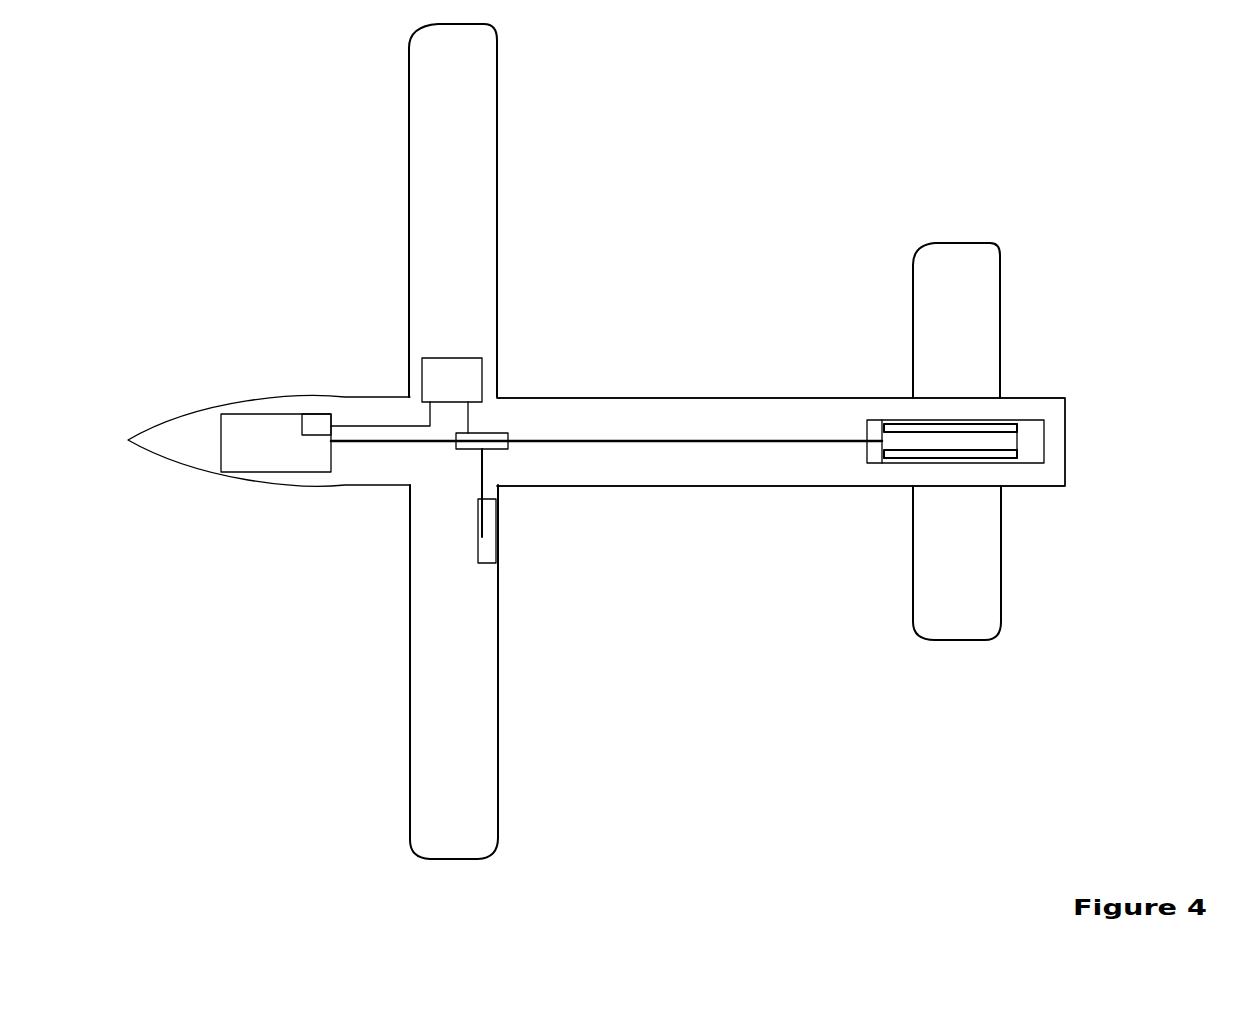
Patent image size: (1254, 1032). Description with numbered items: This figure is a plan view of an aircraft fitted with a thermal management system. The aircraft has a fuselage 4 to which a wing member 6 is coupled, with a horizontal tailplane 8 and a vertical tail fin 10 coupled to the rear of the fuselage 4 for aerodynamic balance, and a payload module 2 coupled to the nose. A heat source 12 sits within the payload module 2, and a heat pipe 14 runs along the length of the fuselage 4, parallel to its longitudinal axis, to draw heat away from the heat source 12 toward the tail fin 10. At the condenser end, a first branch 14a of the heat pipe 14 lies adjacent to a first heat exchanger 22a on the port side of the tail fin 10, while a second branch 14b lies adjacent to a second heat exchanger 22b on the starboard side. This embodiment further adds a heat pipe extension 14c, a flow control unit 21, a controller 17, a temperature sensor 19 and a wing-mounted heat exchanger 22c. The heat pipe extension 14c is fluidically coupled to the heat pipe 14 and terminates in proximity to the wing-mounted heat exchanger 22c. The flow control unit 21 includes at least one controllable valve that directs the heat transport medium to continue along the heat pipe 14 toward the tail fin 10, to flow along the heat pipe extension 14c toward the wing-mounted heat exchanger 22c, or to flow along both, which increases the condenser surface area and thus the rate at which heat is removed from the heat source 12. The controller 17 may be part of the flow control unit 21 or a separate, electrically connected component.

The payload module 2 is at (268, 396).
The fuselage 4 is at (570, 398).
The wing member 6 is at (497, 155).
The horizontal tailplane 8 is at (975, 243).
The vertical tail fin 10 is at (1044, 450).
The heat source 12 is at (225, 414).
The heat pipe 14 is at (683, 440).
The first branch of the condenser end of the heat pipe 14a is at (1008, 424).
The second branch of the condenser end of the heat pipe 14b is at (1005, 458).
The heat pipe extension 14c is at (480, 484).
The controller 17 is at (422, 370).
The temperature sensor 19 is at (322, 420).
The flow control unit 21 is at (507, 450).
The first heat exchanger 22a is at (900, 420).
The second heat exchanger 22b is at (901, 463).
The wing-mounted heat exchanger 22c is at (486, 545).